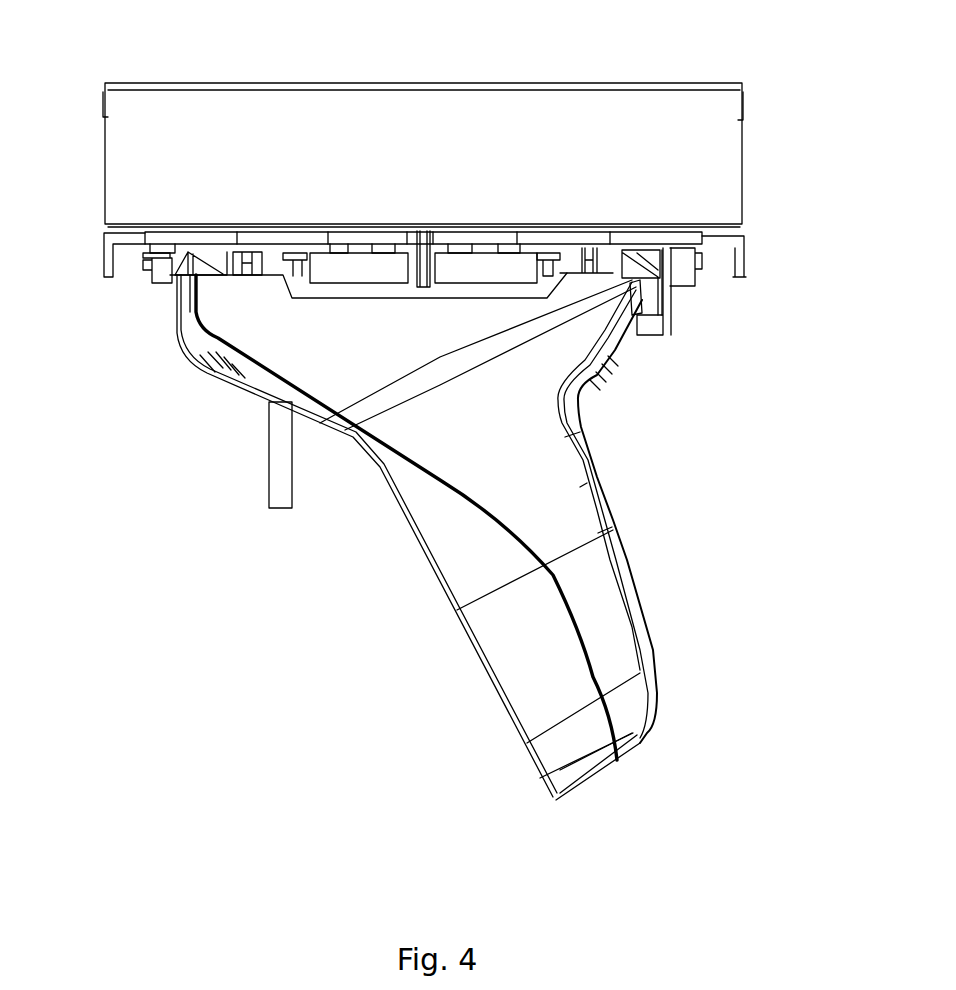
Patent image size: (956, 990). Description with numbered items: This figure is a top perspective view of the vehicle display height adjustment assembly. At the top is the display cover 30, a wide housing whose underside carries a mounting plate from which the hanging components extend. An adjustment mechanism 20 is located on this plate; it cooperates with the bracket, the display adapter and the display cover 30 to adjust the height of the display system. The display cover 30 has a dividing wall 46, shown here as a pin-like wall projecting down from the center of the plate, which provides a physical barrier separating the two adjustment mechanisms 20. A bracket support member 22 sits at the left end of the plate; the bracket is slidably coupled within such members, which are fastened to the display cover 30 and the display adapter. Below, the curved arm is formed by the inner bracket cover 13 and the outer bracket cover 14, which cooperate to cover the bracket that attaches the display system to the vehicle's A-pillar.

The display cover 30 is at (575, 83).
The adjustment mechanism 20 is at (745, 287).
The bracket support member 22 is at (172, 272).
The dividing wall 46 is at (422, 255).
The outer bracket cover 14 is at (520, 737).
The inner bracket cover 13 is at (633, 620).